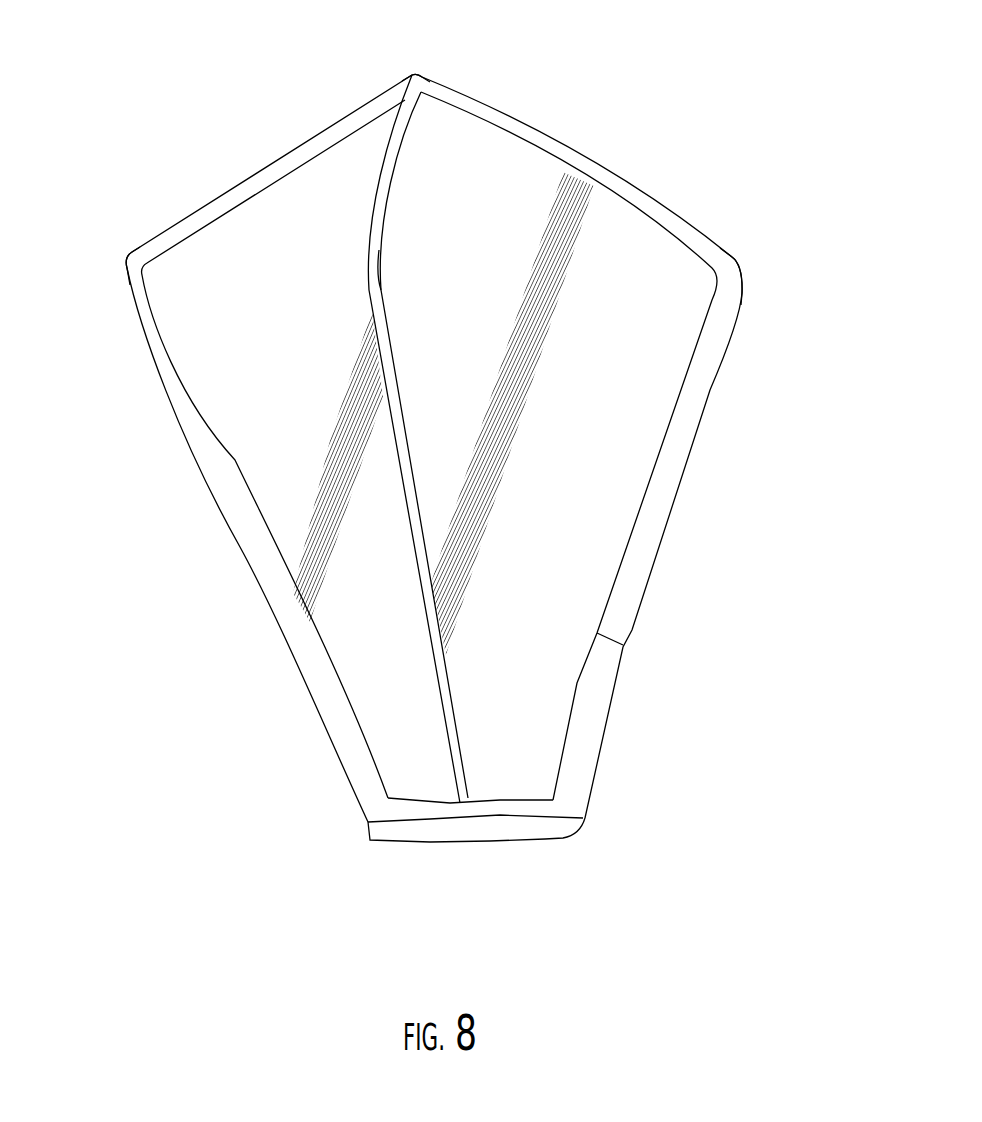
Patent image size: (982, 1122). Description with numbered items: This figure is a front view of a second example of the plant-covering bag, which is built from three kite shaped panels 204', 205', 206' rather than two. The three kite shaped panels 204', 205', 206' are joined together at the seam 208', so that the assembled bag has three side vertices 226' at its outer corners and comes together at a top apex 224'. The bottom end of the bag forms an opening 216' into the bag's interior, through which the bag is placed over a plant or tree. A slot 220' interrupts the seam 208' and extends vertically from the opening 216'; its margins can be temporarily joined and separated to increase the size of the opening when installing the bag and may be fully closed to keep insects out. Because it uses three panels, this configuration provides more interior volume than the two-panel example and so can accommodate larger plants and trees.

The kite shaped panel 204' is at (273, 449).
The kite shaped panel 205' is at (434, 448).
The kite shaped panel 206' is at (569, 446).
The seam 208' is at (462, 439).
The opening 216' is at (476, 844).
The slot 220' is at (649, 709).
The top apex 224' is at (450, 49).
The side vertices 226' is at (434, 264).